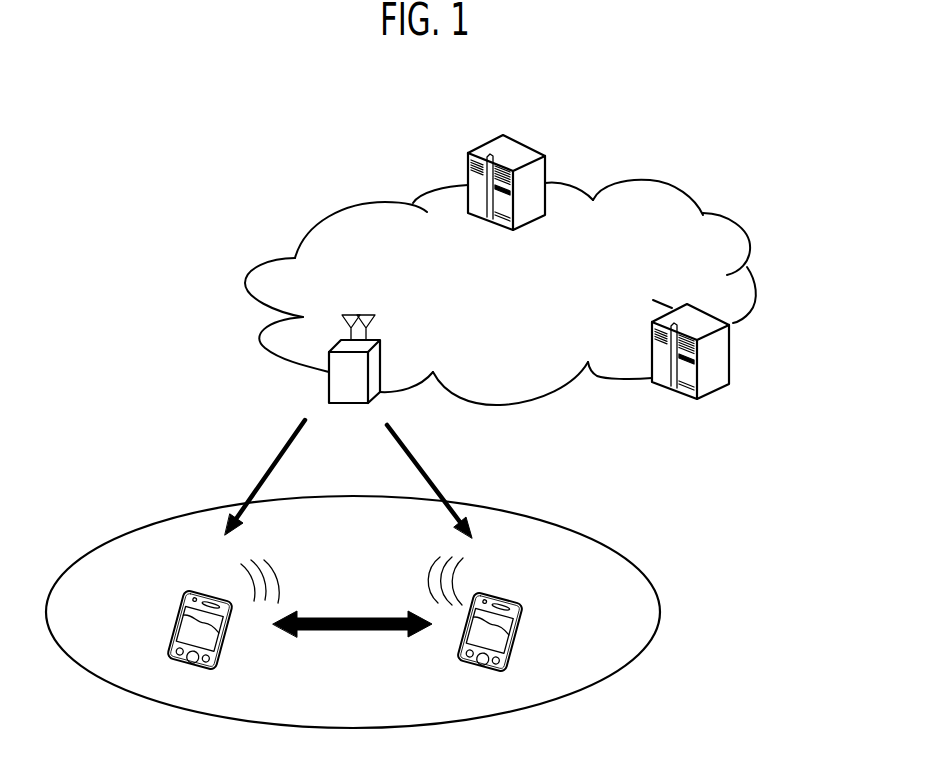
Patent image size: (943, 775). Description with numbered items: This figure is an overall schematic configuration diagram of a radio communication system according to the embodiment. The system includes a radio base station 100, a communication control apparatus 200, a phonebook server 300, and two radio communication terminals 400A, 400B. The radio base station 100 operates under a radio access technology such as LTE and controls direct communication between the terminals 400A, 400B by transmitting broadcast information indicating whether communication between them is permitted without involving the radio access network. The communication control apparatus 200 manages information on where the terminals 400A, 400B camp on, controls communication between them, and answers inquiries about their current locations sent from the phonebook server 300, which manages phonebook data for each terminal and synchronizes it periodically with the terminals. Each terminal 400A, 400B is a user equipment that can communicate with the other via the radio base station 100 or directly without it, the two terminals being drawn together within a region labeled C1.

The radio base station 100 is at (380, 358).
The communication control apparatus 200 is at (727, 365).
The phonebook server 300 is at (524, 145).
The radio communication terminal 400A is at (183, 605).
The radio communication terminal 400B is at (523, 617).
The cell C1 is at (557, 527).